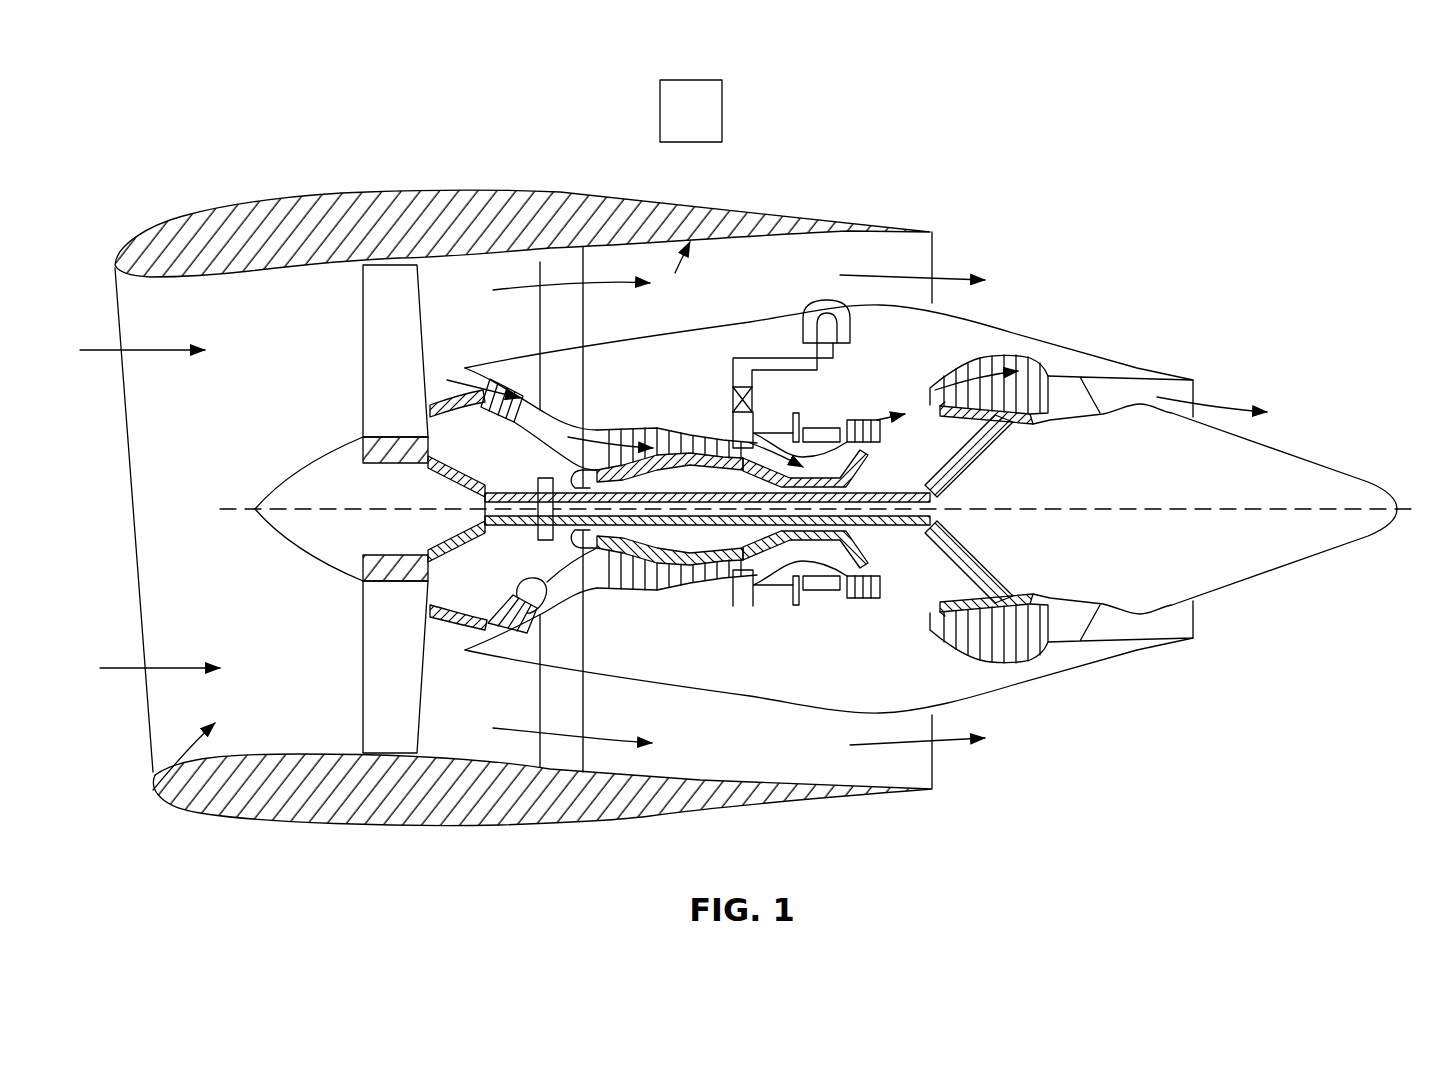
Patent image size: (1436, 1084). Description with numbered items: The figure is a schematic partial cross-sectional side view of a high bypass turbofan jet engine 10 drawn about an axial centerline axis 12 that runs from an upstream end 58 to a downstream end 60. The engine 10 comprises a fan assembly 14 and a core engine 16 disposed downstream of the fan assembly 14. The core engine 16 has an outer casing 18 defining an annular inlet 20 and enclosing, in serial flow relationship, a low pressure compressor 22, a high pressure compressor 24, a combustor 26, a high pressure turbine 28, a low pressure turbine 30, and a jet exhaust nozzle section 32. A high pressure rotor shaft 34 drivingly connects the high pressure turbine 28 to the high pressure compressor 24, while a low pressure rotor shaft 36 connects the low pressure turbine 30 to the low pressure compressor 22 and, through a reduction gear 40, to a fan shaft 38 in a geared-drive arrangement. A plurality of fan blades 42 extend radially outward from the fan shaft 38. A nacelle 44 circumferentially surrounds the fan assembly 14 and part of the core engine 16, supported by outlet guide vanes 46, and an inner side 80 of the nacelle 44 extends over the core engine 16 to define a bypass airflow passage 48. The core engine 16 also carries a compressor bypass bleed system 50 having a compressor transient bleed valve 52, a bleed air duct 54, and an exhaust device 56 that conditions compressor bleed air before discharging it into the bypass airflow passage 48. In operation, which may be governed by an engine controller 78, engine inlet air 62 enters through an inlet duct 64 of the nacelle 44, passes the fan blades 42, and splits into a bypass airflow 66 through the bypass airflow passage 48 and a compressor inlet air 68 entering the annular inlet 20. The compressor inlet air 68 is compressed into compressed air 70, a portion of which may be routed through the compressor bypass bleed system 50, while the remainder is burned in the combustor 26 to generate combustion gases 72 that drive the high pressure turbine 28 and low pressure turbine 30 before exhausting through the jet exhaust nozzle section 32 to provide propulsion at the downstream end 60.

The high bypass turbofan jet engine 10 is at (1112, 193).
The axial centerline axis 12 is at (1150, 509).
The fan assembly 14 is at (404, 449).
The core engine 16 is at (770, 308).
The outer casing 18 is at (765, 700).
The annular inlet 20 is at (472, 633).
The low pressure compressor 22 is at (517, 580).
The high pressure compressor 24 is at (617, 577).
The combustor 26 is at (817, 583).
The high pressure turbine 28 is at (947, 583).
The low pressure turbine 30 is at (1020, 665).
The jet exhaust nozzle section 32 is at (1100, 610).
The high pressure rotor shaft 34 is at (850, 477).
The low pressure rotor shaft 36 is at (970, 462).
The fan shaft 38 is at (437, 470).
The reduction gear 40 is at (543, 478).
The fan blades 42 is at (368, 352).
The nacelle 44 is at (365, 190).
The outlet guide vanes 46 is at (568, 263).
The bypass airflow passage 48 is at (703, 298).
The compressor bypass bleed system 50 is at (862, 347).
The compressor transient bleed valve 52 is at (728, 400).
The bleed air duct 54 is at (762, 358).
The exhaust device 56 is at (828, 297).
The upstream end 58 is at (88, 522).
The downstream end 60 is at (1391, 568).
The engine inlet air 62 is at (167, 350).
The inlet duct 64 is at (153, 768).
The bypass airflow 66 is at (607, 290).
The compressor inlet air 68 is at (467, 383).
The compressed air 70 is at (605, 447).
The combustion gases 72 is at (880, 418).
The engine controller 78 is at (690, 196).
The inner side 80 is at (672, 274).